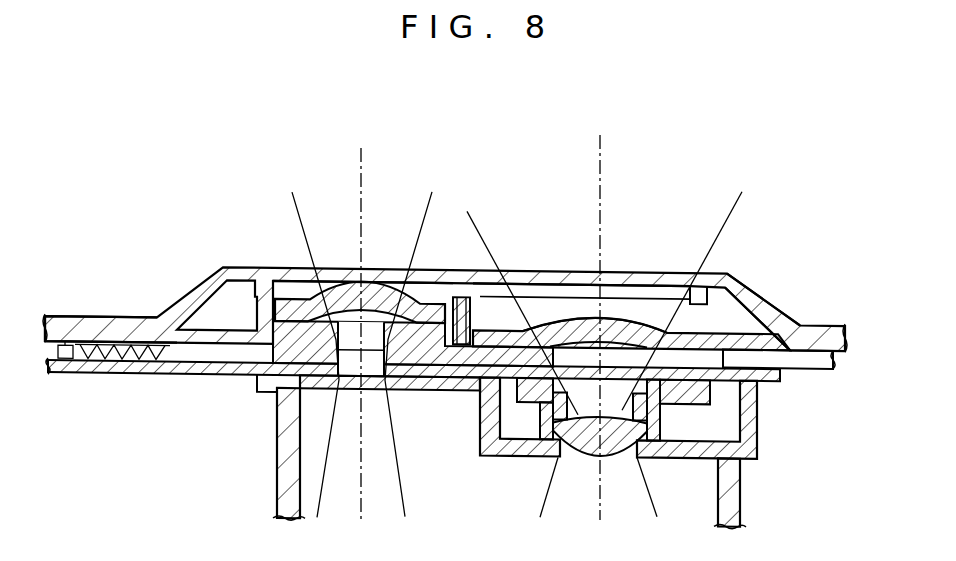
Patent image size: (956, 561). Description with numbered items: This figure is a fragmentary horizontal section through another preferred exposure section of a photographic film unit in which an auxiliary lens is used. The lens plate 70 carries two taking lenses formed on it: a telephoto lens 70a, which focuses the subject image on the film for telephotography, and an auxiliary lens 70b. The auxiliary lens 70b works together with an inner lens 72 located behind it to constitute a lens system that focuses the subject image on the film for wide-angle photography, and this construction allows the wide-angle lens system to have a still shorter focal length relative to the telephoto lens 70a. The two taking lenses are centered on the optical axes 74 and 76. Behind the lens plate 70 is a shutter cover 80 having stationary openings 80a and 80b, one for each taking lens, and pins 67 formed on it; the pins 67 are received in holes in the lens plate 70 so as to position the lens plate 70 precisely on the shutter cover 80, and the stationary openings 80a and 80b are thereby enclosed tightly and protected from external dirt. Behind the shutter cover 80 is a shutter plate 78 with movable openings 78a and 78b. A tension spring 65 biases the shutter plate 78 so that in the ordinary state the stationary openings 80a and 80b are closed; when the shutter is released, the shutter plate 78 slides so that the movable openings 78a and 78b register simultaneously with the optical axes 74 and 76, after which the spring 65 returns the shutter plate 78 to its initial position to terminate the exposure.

The tension spring 65 is at (118, 320).
The pin 67 is at (470, 296).
The lens plate 70 is at (757, 293).
The telephoto lens 70a is at (350, 282).
The auxiliary lens 70b is at (613, 315).
The inner lens 72 is at (613, 457).
The optical axis 74 is at (367, 169).
The optical axis 76 is at (604, 154).
The shutter plate 78 is at (188, 367).
The movable opening 78a is at (413, 390).
The movable opening 78b is at (650, 368).
The shutter cover 80 is at (210, 320).
The stationary opening 80a is at (382, 290).
The stationary opening 80b is at (570, 315).